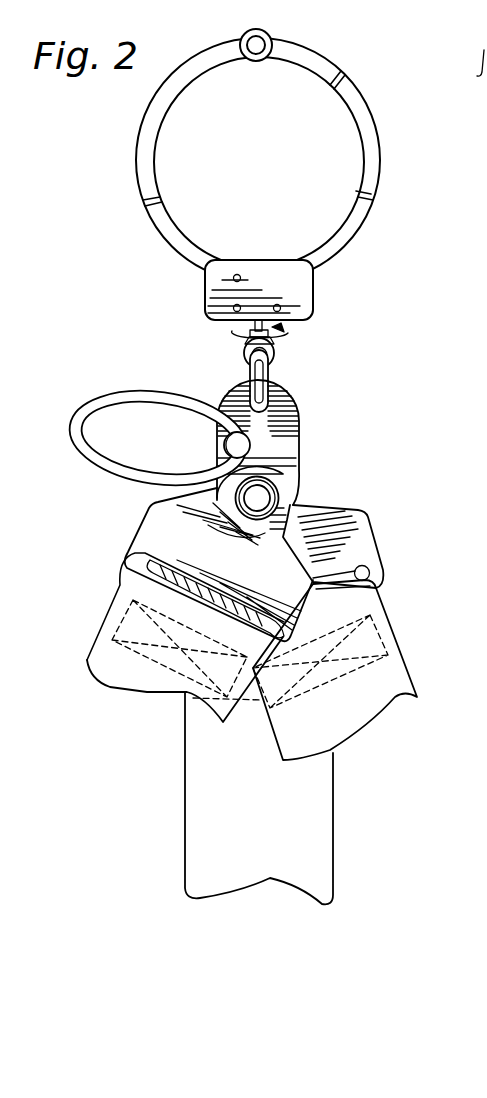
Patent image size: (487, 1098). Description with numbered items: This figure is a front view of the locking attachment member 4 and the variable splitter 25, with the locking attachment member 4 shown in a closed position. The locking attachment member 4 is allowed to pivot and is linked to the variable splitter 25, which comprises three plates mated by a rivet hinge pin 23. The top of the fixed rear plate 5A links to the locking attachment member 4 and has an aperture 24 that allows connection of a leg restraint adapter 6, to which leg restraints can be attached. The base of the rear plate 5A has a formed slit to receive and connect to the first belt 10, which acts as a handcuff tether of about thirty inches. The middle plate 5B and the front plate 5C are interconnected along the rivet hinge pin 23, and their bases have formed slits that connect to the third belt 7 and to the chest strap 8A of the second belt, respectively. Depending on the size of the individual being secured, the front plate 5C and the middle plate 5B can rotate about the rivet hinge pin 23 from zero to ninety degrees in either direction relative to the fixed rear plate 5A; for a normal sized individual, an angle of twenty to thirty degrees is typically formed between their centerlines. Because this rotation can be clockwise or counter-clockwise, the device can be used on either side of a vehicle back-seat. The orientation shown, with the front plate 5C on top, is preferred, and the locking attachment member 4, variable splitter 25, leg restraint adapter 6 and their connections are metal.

The locking attachment member 4 is at (327, 70).
The aperture 24 is at (222, 398).
The rear plate 5A is at (298, 405).
The leg restraint adapter 6 is at (115, 396).
The rivet hinge pin 23 is at (278, 481).
The variable splitter 25 is at (305, 471).
The front plate 5C is at (150, 528).
The middle plate 5B is at (372, 542).
The third belt 7 is at (100, 657).
The chest strap 8A is at (400, 658).
The first belt 10 is at (323, 798).